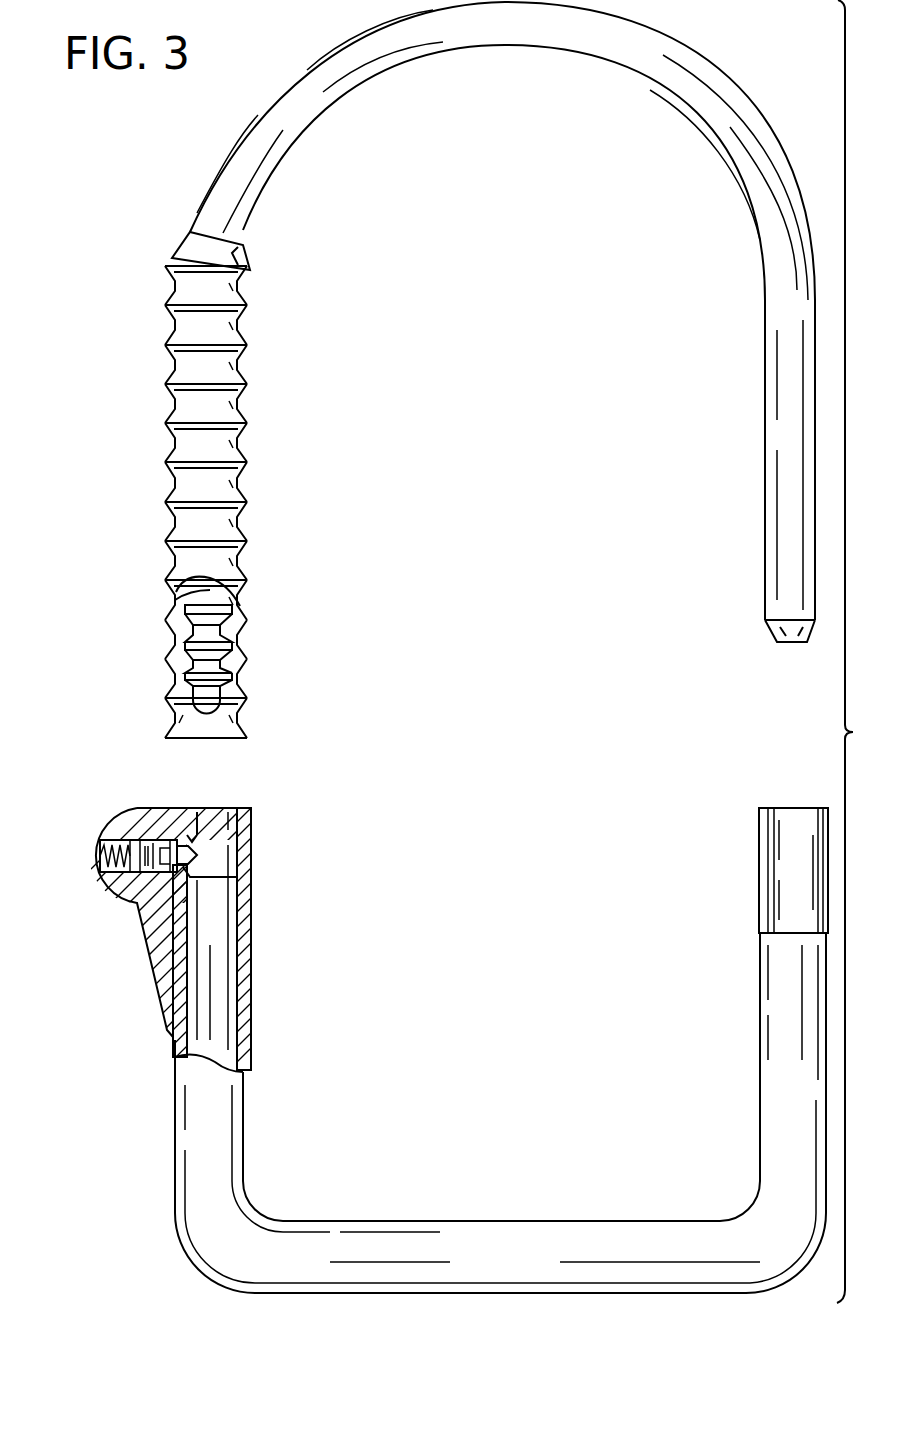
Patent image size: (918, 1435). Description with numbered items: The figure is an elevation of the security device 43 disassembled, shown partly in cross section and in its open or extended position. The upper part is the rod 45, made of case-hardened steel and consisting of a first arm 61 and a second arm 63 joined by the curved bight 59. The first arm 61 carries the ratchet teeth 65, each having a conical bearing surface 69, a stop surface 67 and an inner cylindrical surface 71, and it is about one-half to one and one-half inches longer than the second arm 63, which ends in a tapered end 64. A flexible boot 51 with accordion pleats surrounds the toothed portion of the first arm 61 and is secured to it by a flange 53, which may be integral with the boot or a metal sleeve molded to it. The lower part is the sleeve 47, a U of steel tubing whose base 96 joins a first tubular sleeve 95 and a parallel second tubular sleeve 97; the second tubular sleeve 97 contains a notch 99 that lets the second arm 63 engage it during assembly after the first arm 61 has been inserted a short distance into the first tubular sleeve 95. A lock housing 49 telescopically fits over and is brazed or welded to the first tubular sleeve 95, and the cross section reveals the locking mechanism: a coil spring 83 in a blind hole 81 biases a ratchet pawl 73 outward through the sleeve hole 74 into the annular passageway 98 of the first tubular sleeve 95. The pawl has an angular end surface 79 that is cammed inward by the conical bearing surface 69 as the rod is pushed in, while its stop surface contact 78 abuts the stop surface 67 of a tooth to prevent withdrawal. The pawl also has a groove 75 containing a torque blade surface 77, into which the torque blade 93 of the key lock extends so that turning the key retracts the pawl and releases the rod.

The security device 43 is at (143, 183).
The rod 45 is at (690, 56).
The sleeve 47 is at (501, 1050).
The lock housing 49 is at (113, 798).
The flexible boot 51 is at (247, 455).
The flange 53 is at (240, 247).
The bight 59 is at (522, 36).
The first arm 61 is at (242, 642).
The second arm 63 is at (780, 505).
The tapered end 64 is at (782, 628).
The ratchet teeth 65 is at (244, 604).
The stop surface 67 is at (170, 652).
The conical bearing surface 69 is at (170, 588).
The inner cylindrical surface 71 is at (243, 670).
The ratchet pawl 73 is at (194, 832).
The sleeve hole 74 is at (190, 880).
The groove 75 is at (150, 872).
The torque blade surface 77 is at (143, 837).
The stop surface contact 78 is at (200, 878).
The angular end surface 79 is at (190, 853).
The blind hole 81 is at (162, 842).
The coil spring 83 is at (98, 838).
The torque blade 93 is at (128, 868).
The first tubular sleeve 95 is at (232, 1095).
The base 96 is at (583, 1245).
The second tubular sleeve 97 is at (768, 1058).
The annular passageway 98 is at (215, 972).
The notch 99 is at (765, 890).